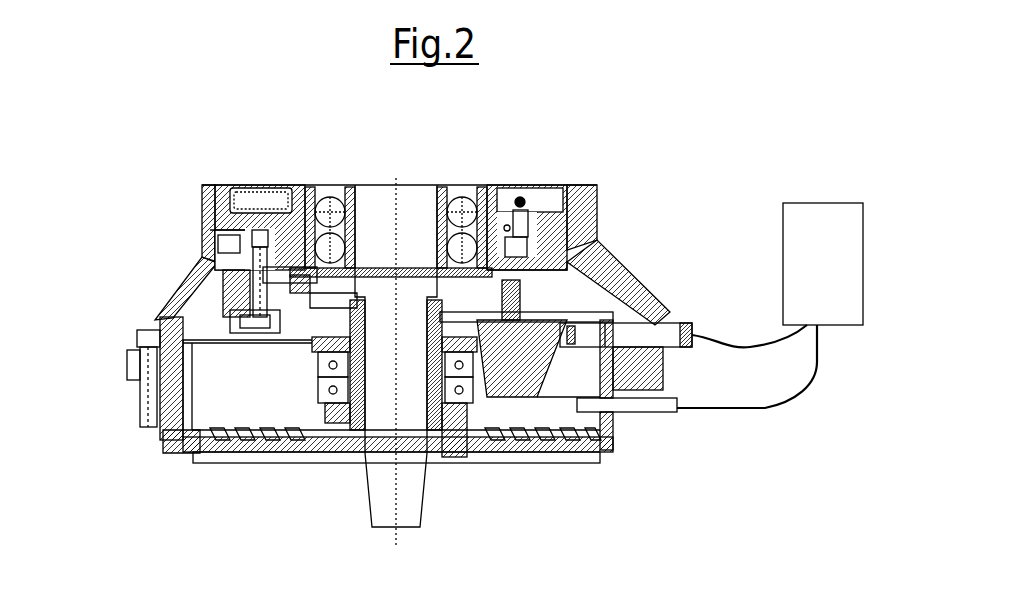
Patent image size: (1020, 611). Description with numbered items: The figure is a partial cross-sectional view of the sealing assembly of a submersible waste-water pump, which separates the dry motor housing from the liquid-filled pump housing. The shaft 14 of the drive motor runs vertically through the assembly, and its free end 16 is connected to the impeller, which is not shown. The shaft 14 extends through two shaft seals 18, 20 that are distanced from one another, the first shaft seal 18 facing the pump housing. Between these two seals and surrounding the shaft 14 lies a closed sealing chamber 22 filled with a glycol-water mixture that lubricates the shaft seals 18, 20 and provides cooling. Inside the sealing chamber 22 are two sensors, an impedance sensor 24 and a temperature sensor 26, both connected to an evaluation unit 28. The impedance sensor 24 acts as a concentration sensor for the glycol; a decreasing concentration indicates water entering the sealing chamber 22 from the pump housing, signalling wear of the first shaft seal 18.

The shaft 14 is at (372, 193).
The free end 16 is at (413, 497).
The first shaft seal 18 is at (347, 433).
The second shaft seal 20 is at (460, 420).
The sealing chamber 22 is at (193, 383).
The impedance sensor 24 is at (650, 412).
The temperature sensor 26 is at (679, 317).
The evaluation unit 28 is at (850, 264).